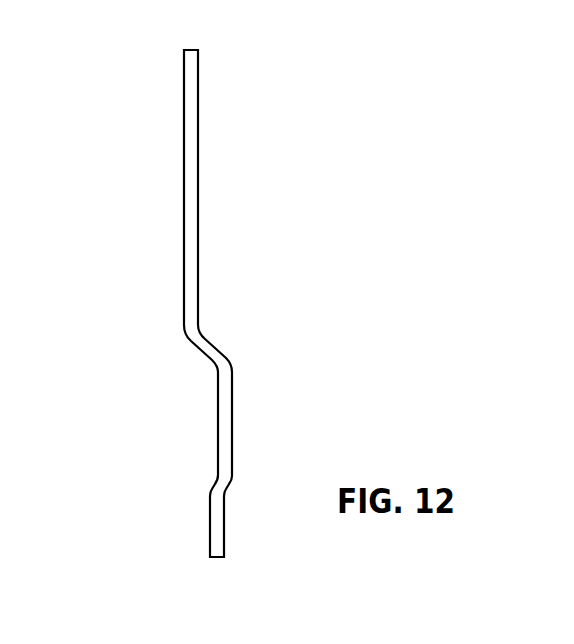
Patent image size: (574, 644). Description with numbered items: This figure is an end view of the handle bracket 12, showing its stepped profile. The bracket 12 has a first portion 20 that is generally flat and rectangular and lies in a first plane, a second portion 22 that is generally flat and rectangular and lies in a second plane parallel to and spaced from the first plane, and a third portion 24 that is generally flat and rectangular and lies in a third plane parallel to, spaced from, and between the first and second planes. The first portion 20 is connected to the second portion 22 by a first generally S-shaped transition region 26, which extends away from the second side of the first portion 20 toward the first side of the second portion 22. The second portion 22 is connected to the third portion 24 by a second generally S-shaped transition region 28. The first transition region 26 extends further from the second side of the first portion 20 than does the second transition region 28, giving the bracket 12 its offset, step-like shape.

The bracket 12 is at (245, 138).
The first portion 20 is at (191, 90).
The second portion 22 is at (232, 421).
The third portion 24 is at (210, 522).
The first transition region 26 is at (198, 350).
The second transition region 28 is at (217, 485).